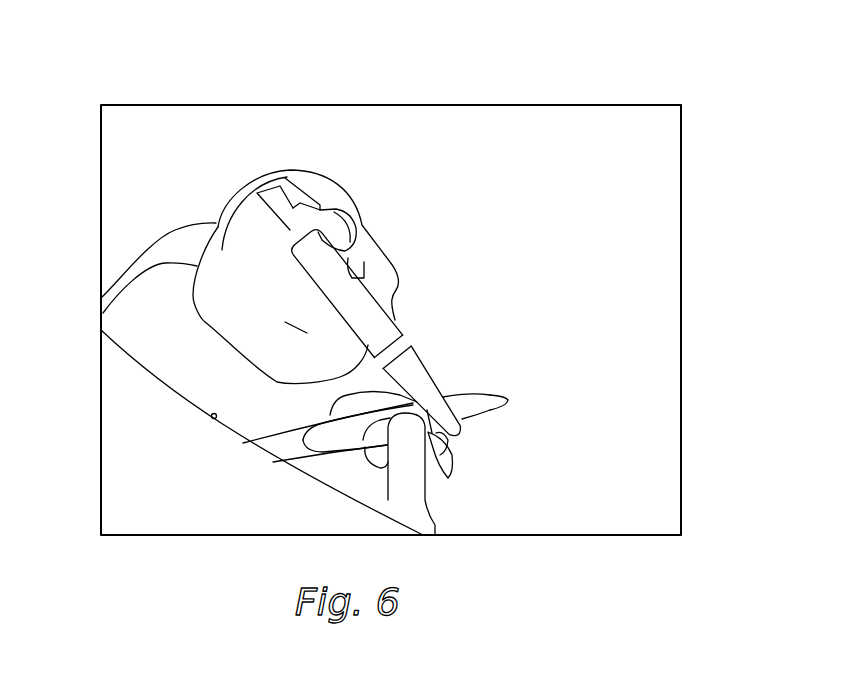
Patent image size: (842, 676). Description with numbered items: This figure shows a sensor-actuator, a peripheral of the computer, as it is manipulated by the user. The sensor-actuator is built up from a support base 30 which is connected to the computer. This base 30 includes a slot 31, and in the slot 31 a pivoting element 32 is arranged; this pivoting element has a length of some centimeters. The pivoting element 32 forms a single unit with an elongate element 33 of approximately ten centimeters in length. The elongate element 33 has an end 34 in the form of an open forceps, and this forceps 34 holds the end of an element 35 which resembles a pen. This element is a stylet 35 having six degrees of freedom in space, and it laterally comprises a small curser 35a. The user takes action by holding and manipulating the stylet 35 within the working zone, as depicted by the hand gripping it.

The support base 30 is at (320, 190).
The slot 31 is at (278, 200).
The pivoting element 32 is at (336, 222).
The elongate element 33 is at (335, 275).
The end in the form of an open forceps 34 is at (413, 368).
The stylet 35 is at (469, 408).
The small curser 35a is at (508, 400).